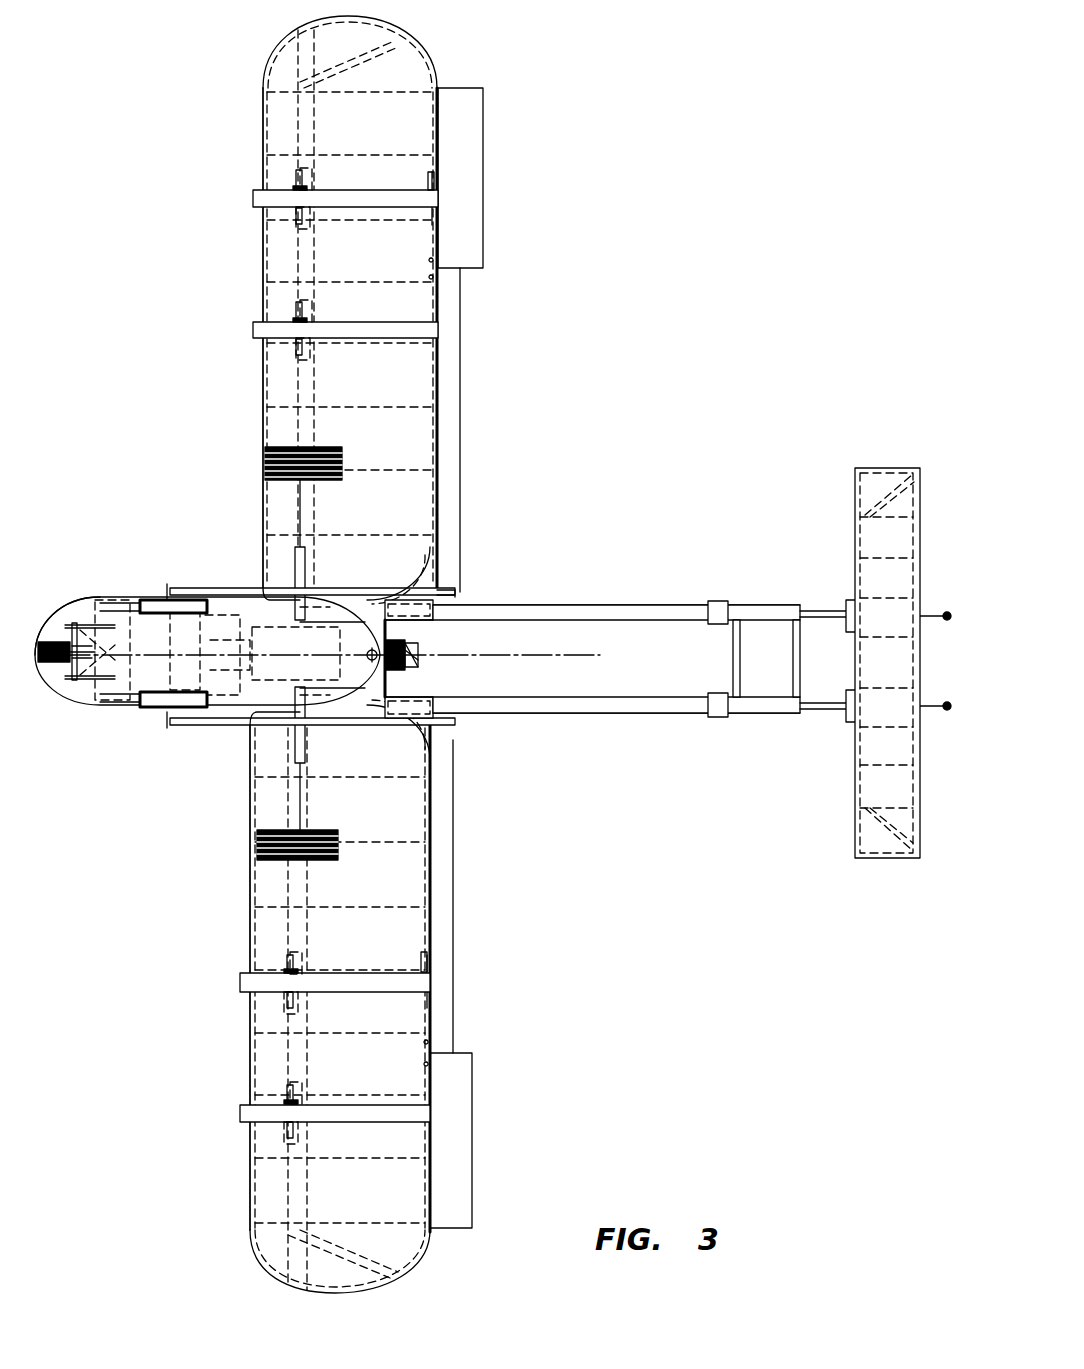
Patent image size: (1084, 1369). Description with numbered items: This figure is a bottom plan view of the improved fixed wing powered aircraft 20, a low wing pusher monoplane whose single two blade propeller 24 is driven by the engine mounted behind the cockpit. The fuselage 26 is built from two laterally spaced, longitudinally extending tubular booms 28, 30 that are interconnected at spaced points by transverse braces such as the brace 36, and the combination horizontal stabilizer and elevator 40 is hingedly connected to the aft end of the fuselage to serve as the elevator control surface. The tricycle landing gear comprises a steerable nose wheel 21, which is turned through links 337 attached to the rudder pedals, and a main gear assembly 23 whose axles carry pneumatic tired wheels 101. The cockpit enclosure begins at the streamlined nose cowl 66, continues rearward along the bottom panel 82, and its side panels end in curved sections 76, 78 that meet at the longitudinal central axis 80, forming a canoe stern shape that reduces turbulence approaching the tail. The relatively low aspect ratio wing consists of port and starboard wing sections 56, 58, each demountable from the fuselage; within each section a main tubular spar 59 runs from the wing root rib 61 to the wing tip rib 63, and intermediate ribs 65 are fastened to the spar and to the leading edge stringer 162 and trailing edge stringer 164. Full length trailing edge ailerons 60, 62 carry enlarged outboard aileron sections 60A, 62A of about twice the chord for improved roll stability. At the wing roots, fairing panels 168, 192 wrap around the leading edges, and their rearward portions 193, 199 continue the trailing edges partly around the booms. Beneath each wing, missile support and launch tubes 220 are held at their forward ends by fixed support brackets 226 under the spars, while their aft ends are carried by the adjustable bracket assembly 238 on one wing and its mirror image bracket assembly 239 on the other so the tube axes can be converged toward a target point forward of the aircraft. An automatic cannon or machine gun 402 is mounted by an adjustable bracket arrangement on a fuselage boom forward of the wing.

The aircraft 20 is at (512, 325).
The steerable nose wheel 21 is at (45, 632).
The main gear assembly 23 is at (307, 551).
The two blade propeller 24 is at (412, 672).
The fuselage 26 is at (522, 712).
The tubular boom 28 is at (574, 606).
The tubular boom 30 is at (574, 712).
The transverse brace 36 is at (734, 660).
The combination horizontal stabilizer and elevator 40 is at (856, 560).
The port wing section 56 is at (263, 126).
The starboard wing section 58 is at (250, 1064).
The main tubular spar 59 is at (267, 250).
The aileron 60 is at (462, 398).
The aileron section 60A is at (474, 152).
The wing root rib 61 is at (262, 566).
The aileron 62 is at (454, 952).
The aileron section 62A is at (460, 1164).
The wing tip rib 63 is at (263, 62).
The intermediate ribs 65 is at (380, 356).
The nose cowl 66 is at (45, 700).
The curved section 76 is at (318, 580).
The curved section 78 is at (332, 735).
The longitudinal central axis 80 is at (486, 650).
The bottom panel 82 is at (295, 660).
The pneumatic tired wheel 101 is at (265, 460).
The leading edge stringer 162 is at (262, 425).
The trailing edge stringer 164 is at (440, 438).
The fairing panel 168 is at (400, 590).
The fairing panel 192 is at (420, 720).
The rearward portion 193 is at (412, 622).
The rearward portion 199 is at (420, 672).
The missile support and launch tubes 220 is at (336, 198).
The support brackets 226 is at (292, 184).
The adjustable missile launch tube support bracket assembly 238 is at (440, 222).
The bracket assembly 239 is at (434, 1010).
The links 337 is at (108, 584).
The automatic cannon or machine gun 402 is at (160, 600).